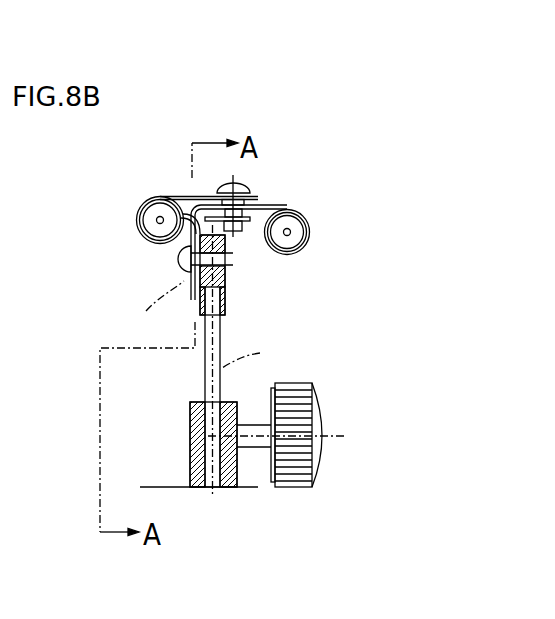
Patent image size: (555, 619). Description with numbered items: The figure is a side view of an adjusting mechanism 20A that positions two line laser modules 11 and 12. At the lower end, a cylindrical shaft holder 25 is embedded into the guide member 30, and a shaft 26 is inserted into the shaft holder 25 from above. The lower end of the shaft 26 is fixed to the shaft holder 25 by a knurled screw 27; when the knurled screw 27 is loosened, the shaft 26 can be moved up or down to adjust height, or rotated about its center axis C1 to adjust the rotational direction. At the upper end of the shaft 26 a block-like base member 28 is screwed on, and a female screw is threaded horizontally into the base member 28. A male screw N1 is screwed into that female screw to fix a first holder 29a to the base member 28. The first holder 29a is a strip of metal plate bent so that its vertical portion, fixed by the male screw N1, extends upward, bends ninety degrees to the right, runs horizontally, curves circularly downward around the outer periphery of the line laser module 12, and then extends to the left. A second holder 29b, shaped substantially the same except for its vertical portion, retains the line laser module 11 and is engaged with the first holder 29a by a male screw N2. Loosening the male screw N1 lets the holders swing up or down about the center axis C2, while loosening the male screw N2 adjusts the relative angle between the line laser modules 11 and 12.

The adjusting mechanism 20A is at (292, 64).
The male screw N2 is at (242, 182).
The first holder 29a is at (298, 210).
The second holder 29b is at (137, 217).
The line laser module 11 is at (150, 232).
The line laser module 12 is at (298, 246).
The male screw N1 is at (179, 262).
The base member 28 is at (230, 289).
The center axis C2 is at (155, 314).
The shaft 26 is at (222, 334).
The center axis C1 is at (253, 361).
The knurled screw 27 is at (302, 383).
The shaft holder 25 is at (189, 421).
The guide member 30 is at (168, 487).